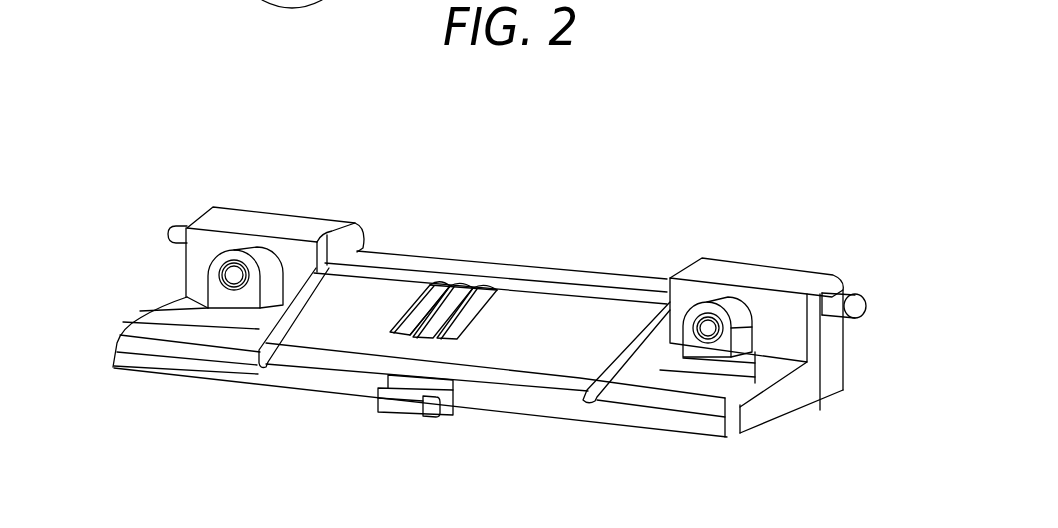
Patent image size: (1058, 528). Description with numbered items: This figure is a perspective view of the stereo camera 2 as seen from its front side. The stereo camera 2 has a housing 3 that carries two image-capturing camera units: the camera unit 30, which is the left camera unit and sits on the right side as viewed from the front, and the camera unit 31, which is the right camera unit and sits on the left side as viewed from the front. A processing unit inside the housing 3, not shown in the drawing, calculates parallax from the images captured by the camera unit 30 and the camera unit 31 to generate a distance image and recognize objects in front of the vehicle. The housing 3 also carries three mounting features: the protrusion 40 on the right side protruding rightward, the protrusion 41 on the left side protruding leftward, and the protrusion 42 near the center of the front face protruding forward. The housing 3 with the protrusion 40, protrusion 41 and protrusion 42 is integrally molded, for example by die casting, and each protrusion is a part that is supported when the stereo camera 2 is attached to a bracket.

The stereo camera 2 is at (600, 147).
The housing 3 is at (545, 277).
The camera unit 30 is at (710, 335).
The camera unit 31 is at (279, 276).
The protrusion 40 is at (848, 293).
The protrusion 41 is at (186, 227).
The protrusion 42 is at (392, 413).